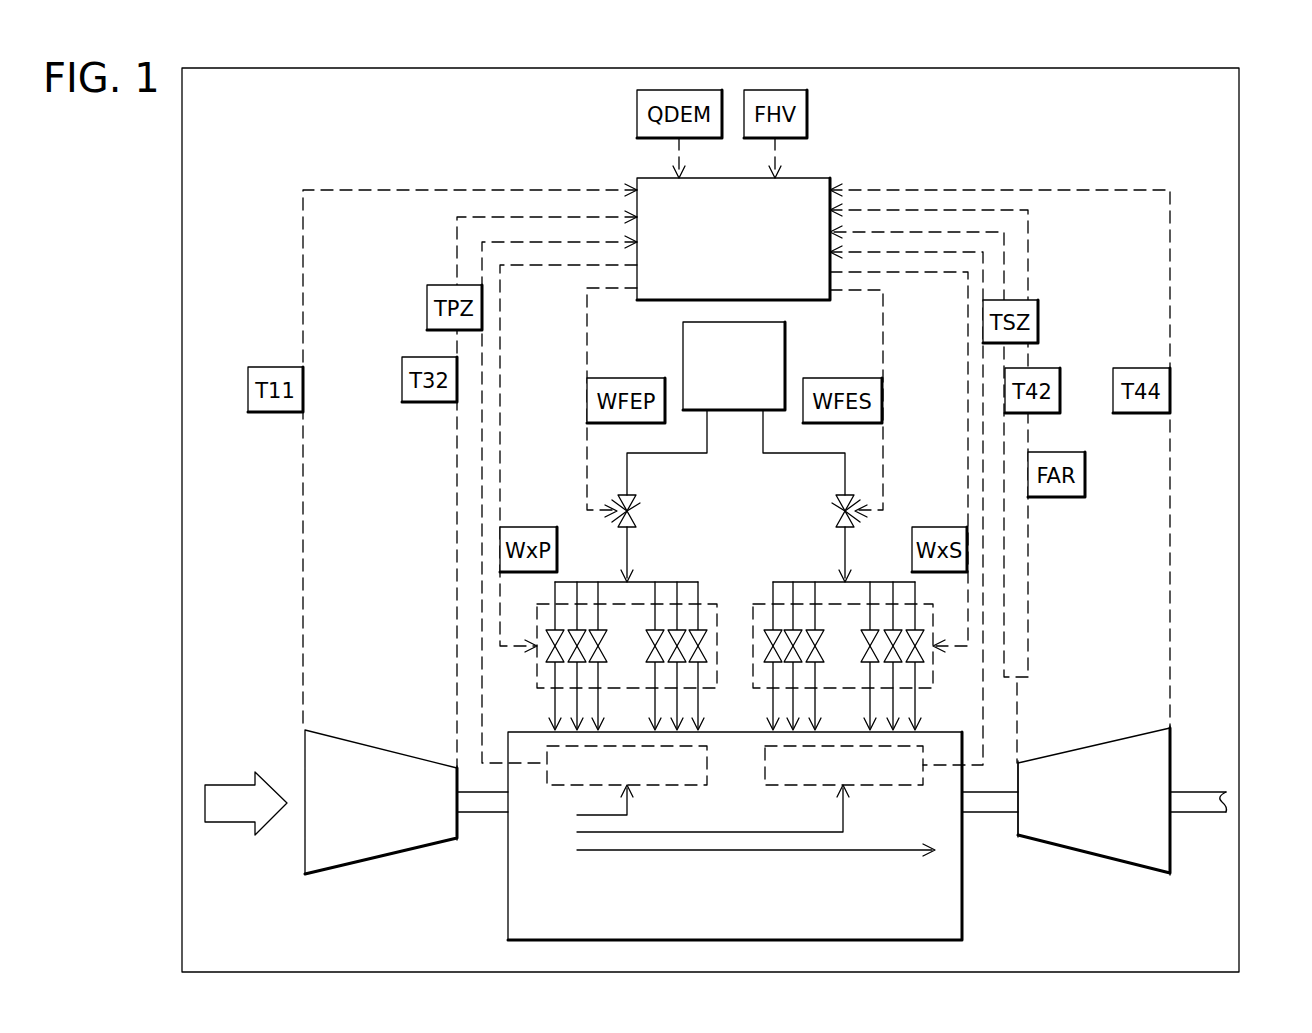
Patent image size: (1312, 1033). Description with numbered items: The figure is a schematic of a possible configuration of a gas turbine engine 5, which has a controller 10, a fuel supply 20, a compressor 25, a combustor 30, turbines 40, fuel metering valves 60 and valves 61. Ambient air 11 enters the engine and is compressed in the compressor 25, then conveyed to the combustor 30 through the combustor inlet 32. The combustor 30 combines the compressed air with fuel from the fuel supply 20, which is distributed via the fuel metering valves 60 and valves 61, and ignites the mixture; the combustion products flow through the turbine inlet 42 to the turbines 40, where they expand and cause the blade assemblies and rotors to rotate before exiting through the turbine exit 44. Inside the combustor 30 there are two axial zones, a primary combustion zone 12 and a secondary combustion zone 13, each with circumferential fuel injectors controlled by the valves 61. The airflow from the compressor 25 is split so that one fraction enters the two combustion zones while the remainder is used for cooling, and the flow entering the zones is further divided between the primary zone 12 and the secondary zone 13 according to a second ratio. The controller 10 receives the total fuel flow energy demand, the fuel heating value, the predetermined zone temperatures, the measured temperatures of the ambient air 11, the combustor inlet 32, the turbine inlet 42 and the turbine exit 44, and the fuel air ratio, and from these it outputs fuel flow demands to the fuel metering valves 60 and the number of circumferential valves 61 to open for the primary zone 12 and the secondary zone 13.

The gas turbine engine 5 is at (1240, 150).
The controller 10 is at (819, 178).
The ambient air 11 is at (229, 783).
The primary combustion zone 12 is at (707, 763).
The secondary combustion zone 13 is at (815, 787).
The fuel supply 20 is at (787, 350).
The compressor 25 is at (380, 860).
The combustor 30 is at (508, 910).
The combustor inlet 32 is at (455, 766).
The turbines 40 is at (1093, 857).
The turbine inlet 42 is at (1019, 763).
The turbine exit 44 is at (1171, 728).
The fuel metering valves 60 is at (636, 513).
The valves 61 is at (765, 604).